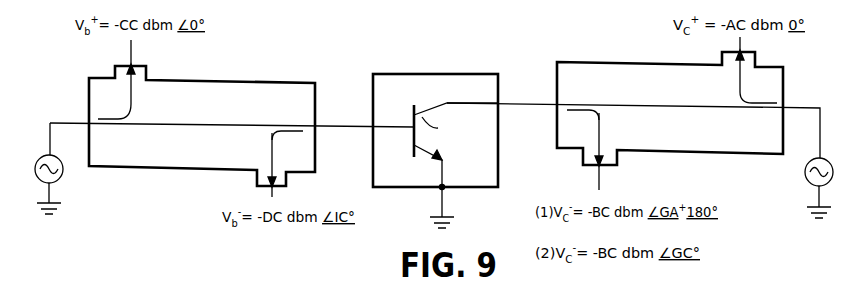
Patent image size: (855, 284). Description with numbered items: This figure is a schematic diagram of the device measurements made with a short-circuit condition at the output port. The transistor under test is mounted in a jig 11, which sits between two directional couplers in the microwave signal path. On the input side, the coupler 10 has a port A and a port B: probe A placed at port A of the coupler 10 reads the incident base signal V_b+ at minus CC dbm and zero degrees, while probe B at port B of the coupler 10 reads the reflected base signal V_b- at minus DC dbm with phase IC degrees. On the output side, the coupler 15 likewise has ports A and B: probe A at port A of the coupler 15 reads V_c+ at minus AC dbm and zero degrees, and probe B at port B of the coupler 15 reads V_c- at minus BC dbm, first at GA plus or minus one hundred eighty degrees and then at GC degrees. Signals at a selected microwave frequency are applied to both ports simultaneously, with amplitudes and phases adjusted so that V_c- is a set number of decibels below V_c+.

The coupler 10 is at (214, 83).
The jig 11 is at (440, 74).
The coupler 15 is at (628, 72).